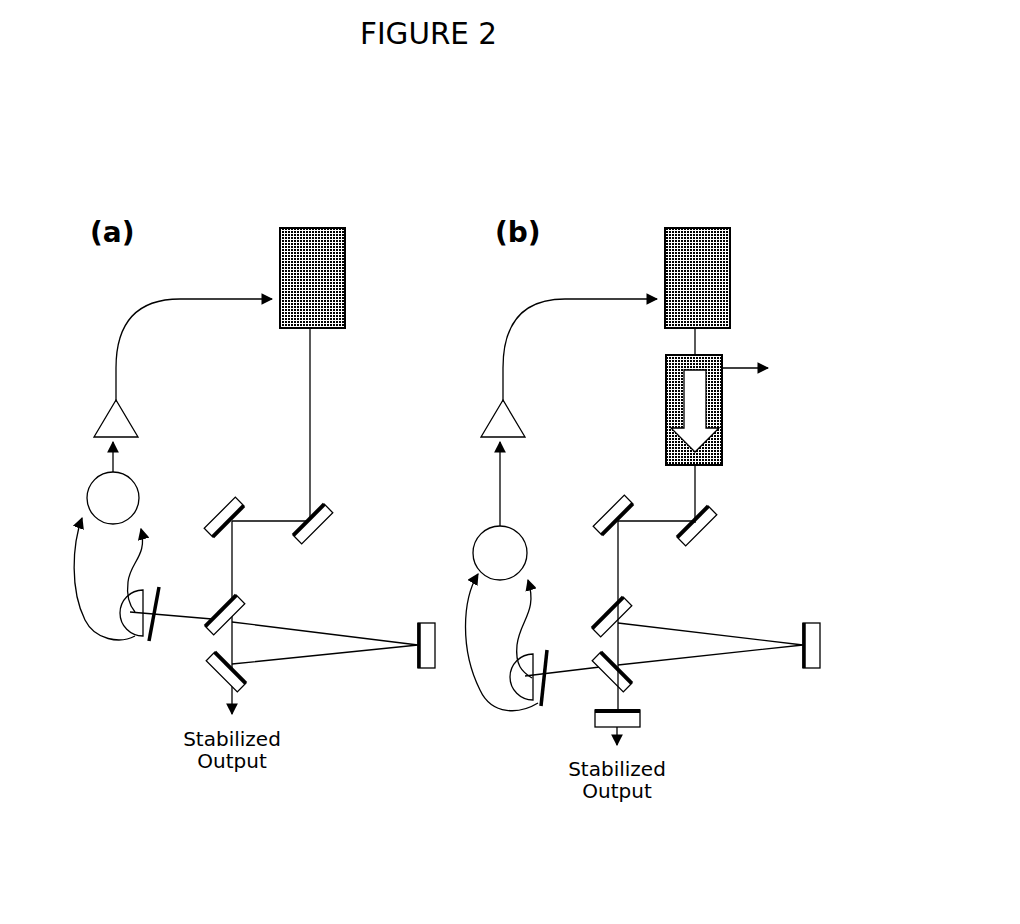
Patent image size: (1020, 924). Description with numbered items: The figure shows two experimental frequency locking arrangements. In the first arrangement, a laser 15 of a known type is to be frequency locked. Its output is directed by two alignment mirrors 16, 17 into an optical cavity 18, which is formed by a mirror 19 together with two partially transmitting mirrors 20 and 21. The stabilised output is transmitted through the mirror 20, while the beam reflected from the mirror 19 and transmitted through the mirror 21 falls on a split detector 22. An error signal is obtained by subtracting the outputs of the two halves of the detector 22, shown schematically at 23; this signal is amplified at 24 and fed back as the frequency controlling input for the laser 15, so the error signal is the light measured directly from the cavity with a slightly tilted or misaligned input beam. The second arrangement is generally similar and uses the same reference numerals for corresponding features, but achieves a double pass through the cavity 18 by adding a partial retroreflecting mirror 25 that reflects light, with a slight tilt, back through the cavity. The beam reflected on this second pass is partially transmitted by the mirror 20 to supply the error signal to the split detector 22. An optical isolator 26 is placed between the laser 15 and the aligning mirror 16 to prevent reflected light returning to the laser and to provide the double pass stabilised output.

The laser 15 is at (325, 268).
The alignment mirror 16 is at (325, 503).
The alignment mirror 17 is at (222, 500).
The optical cavity 18 is at (320, 652).
The mirror 19 is at (426, 668).
The partially transmitting mirror 20 is at (210, 676).
The partially transmitting mirror 21 is at (218, 604).
The split detector 22 is at (138, 637).
The subtraction 23 is at (90, 494).
The amplifier 24 is at (107, 428).
The partial retroreflecting mirror 25 is at (626, 718).
The optical isolator 26 is at (666, 405).